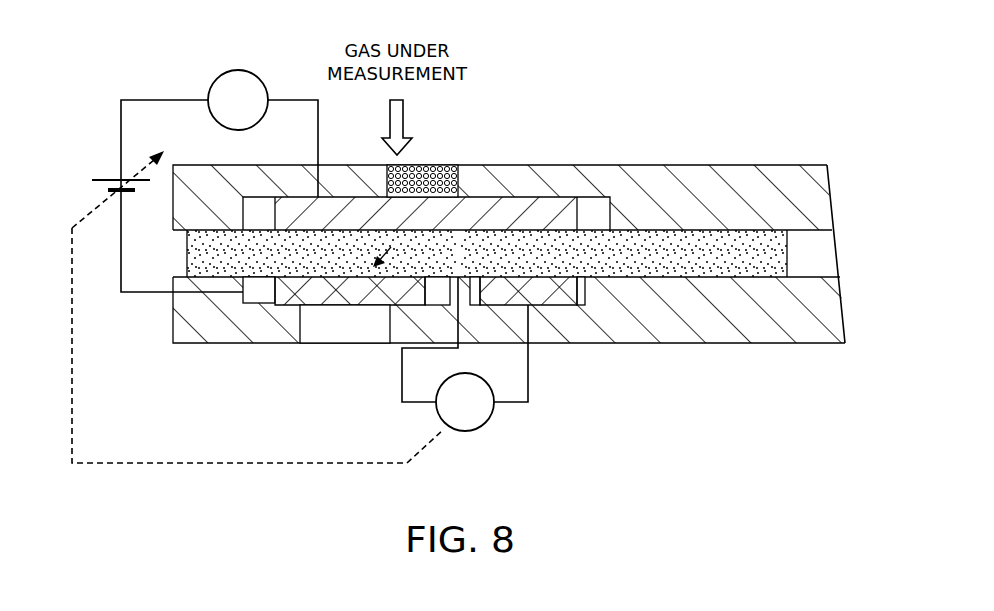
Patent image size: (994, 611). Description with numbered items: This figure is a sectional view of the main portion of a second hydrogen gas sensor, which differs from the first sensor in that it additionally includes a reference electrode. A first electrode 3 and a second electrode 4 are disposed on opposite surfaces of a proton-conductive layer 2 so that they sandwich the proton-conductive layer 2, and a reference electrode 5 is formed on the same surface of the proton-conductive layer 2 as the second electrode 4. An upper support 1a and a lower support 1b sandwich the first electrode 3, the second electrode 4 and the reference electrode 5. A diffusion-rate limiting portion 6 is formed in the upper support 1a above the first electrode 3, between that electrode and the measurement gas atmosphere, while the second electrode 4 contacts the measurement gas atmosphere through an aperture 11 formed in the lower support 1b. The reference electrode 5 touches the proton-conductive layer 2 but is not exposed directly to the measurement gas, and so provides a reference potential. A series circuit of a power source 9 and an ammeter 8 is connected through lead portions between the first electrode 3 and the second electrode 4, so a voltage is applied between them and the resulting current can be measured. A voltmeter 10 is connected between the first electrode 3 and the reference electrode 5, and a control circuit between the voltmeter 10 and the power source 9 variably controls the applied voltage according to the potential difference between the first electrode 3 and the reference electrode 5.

The upper support 1a is at (742, 172).
The lower support 1b is at (763, 334).
The proton-conductive layer 2 is at (637, 237).
The first electrode 3 is at (538, 203).
The second electrode 4 is at (373, 306).
The reference electrode 5 is at (553, 294).
The diffusion-rate limiting portion 6 is at (446, 166).
The ammeter 8 is at (236, 70).
The power source 9 is at (104, 176).
The voltmeter 10 is at (464, 432).
The aperture 11 is at (325, 328).